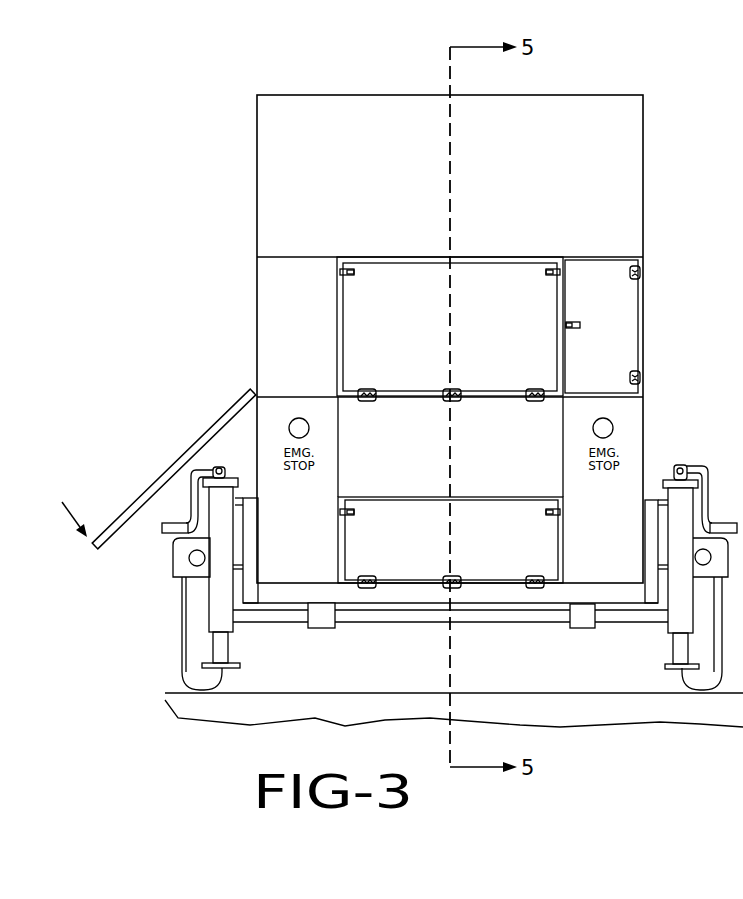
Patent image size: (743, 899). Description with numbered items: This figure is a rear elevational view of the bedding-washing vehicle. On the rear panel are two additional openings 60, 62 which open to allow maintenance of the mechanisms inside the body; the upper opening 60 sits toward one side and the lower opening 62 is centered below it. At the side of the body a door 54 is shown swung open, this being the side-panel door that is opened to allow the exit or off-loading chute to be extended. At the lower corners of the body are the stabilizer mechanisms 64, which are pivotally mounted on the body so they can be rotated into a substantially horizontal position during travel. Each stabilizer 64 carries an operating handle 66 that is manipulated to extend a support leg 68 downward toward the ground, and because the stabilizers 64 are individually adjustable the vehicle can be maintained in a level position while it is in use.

The door 54 is at (140, 490).
The opening 60 is at (622, 360).
The opening 62 is at (420, 549).
The stabilizer mechanism 64 is at (208, 607).
The operating handle 66 is at (160, 531).
The support leg 68 is at (220, 645).